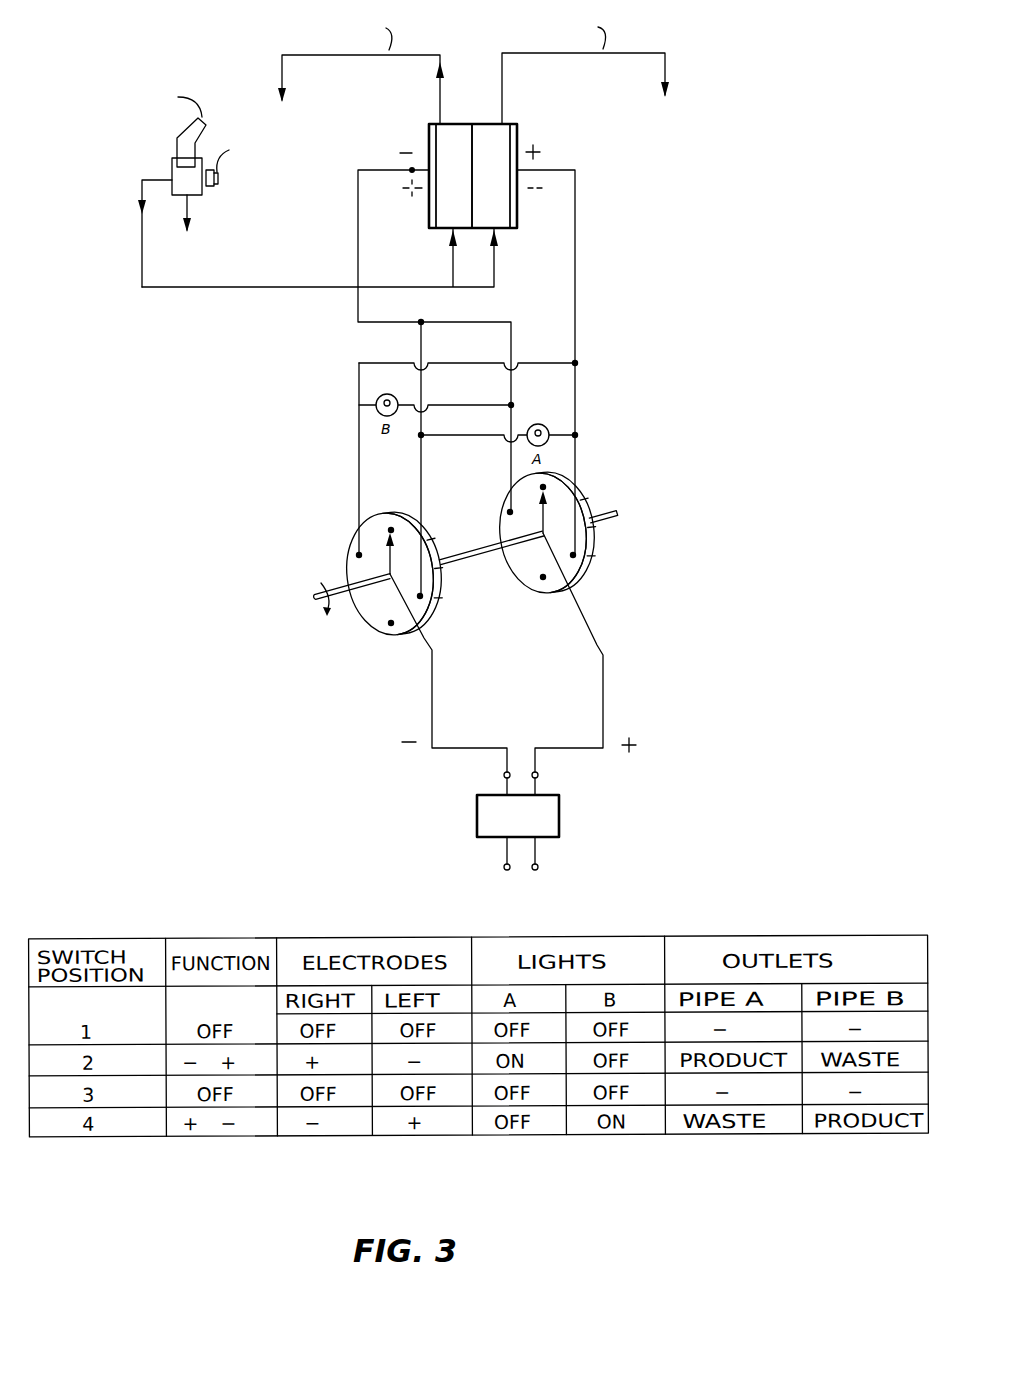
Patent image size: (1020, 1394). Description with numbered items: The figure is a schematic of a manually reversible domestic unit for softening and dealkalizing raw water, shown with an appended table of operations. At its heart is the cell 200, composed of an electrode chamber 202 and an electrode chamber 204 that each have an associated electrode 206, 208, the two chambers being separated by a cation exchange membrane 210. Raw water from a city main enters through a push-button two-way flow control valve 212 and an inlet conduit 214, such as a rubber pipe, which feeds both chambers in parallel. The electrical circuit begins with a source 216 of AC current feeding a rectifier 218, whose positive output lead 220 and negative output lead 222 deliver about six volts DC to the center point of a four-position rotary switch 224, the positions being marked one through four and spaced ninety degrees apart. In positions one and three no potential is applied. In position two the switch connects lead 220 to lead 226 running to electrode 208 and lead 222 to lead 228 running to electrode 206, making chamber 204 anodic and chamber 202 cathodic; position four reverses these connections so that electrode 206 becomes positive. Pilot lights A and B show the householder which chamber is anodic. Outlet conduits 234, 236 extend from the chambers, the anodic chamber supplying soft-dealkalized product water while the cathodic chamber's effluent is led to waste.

The cell 200 is at (648, 213).
The electrode chamber 202 is at (466, 191).
The electrode chamber 204 is at (506, 211).
The electrode 206 is at (429, 127).
The electrode 208 is at (516, 128).
The cation exchange membrane 210 is at (472, 141).
The two-way flow control valve 212 is at (172, 165).
The inlet conduit 214 is at (178, 288).
The source of AC current 216 is at (537, 851).
The rectifier 218 is at (560, 812).
The positive output lead 220 is at (603, 682).
The negative output lead 222 is at (432, 697).
The four-position rotary switch 224 is at (345, 513).
The lead 226 is at (577, 290).
The lead 228 is at (362, 238).
The outlet conduit 234 is at (418, 54).
The outlet conduit 236 is at (636, 54).